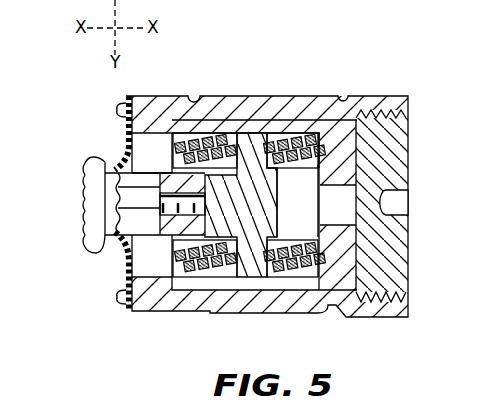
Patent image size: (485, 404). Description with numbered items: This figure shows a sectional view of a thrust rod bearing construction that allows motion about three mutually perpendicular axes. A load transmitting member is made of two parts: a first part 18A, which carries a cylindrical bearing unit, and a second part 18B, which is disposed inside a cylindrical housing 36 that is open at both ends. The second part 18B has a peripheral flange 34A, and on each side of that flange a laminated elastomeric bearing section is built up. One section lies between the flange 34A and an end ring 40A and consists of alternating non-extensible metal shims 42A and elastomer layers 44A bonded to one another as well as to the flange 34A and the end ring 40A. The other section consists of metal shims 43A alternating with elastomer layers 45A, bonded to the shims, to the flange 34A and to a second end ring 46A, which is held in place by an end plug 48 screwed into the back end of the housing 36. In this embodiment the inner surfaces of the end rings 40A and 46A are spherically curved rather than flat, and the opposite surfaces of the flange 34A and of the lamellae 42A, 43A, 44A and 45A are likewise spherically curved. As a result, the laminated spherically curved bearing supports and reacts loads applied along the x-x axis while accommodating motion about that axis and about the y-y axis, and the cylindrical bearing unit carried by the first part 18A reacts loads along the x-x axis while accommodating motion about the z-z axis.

The first part of load transmitting member 18A is at (102, 152).
The second part of load transmitting member 18B is at (300, 200).
The flange 34A is at (285, 132).
The cylindrical housing 36 is at (245, 313).
The end ring 40A is at (186, 128).
The metal shims 42A is at (216, 128).
The metal shims 43A is at (323, 130).
The elastomer layers 44A is at (212, 276).
The elastomer layers 45A is at (294, 278).
The end ring 46A is at (345, 148).
The end plug 48 is at (388, 250).